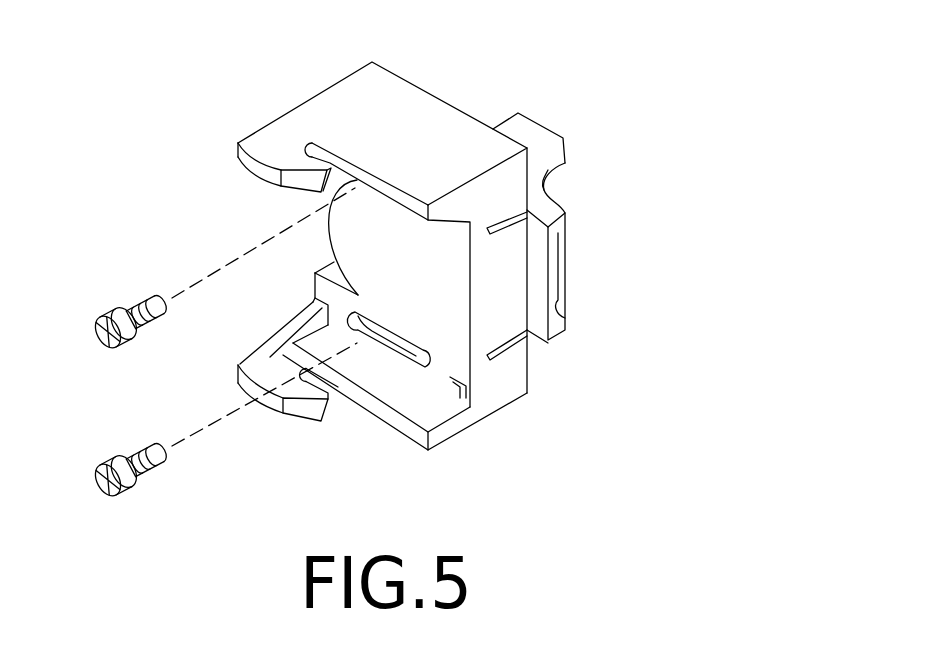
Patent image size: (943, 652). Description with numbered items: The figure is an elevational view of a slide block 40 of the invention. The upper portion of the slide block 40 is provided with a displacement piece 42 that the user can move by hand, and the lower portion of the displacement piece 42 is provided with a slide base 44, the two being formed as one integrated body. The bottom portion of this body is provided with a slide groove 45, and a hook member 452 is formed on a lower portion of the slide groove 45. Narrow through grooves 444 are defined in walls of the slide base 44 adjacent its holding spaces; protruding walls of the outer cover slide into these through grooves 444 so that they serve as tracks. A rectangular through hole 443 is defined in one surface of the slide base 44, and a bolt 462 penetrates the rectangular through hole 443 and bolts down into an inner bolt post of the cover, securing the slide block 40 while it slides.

The slide block 40 is at (466, 64).
The displacement piece 42 is at (557, 215).
The slide base 44 is at (452, 115).
The slide groove 45 is at (323, 148).
The rectangular through hole 443 is at (403, 366).
The narrow through groove 444 is at (510, 223).
The hook member 452 is at (307, 187).
The bolt 462 is at (143, 303).